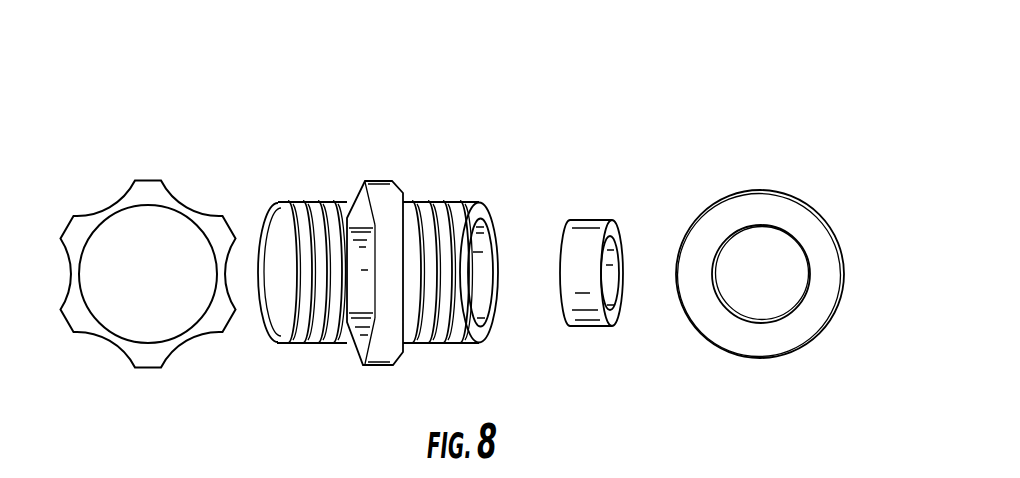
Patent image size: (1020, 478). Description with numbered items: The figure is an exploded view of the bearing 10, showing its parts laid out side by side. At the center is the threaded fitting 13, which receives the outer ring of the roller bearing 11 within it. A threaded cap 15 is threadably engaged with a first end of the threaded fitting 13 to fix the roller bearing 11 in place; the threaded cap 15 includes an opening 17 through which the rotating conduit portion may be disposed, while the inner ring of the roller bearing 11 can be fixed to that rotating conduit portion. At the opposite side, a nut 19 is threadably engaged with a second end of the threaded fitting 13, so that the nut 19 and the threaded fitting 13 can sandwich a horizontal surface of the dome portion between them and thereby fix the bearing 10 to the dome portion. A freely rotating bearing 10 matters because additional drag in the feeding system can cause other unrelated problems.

The bearing 10 is at (752, 92).
The roller bearing 11 is at (596, 220).
The threaded fitting 13 is at (404, 173).
The threaded cap 15 is at (808, 212).
The opening 17 is at (774, 294).
The nut 19 is at (180, 173).